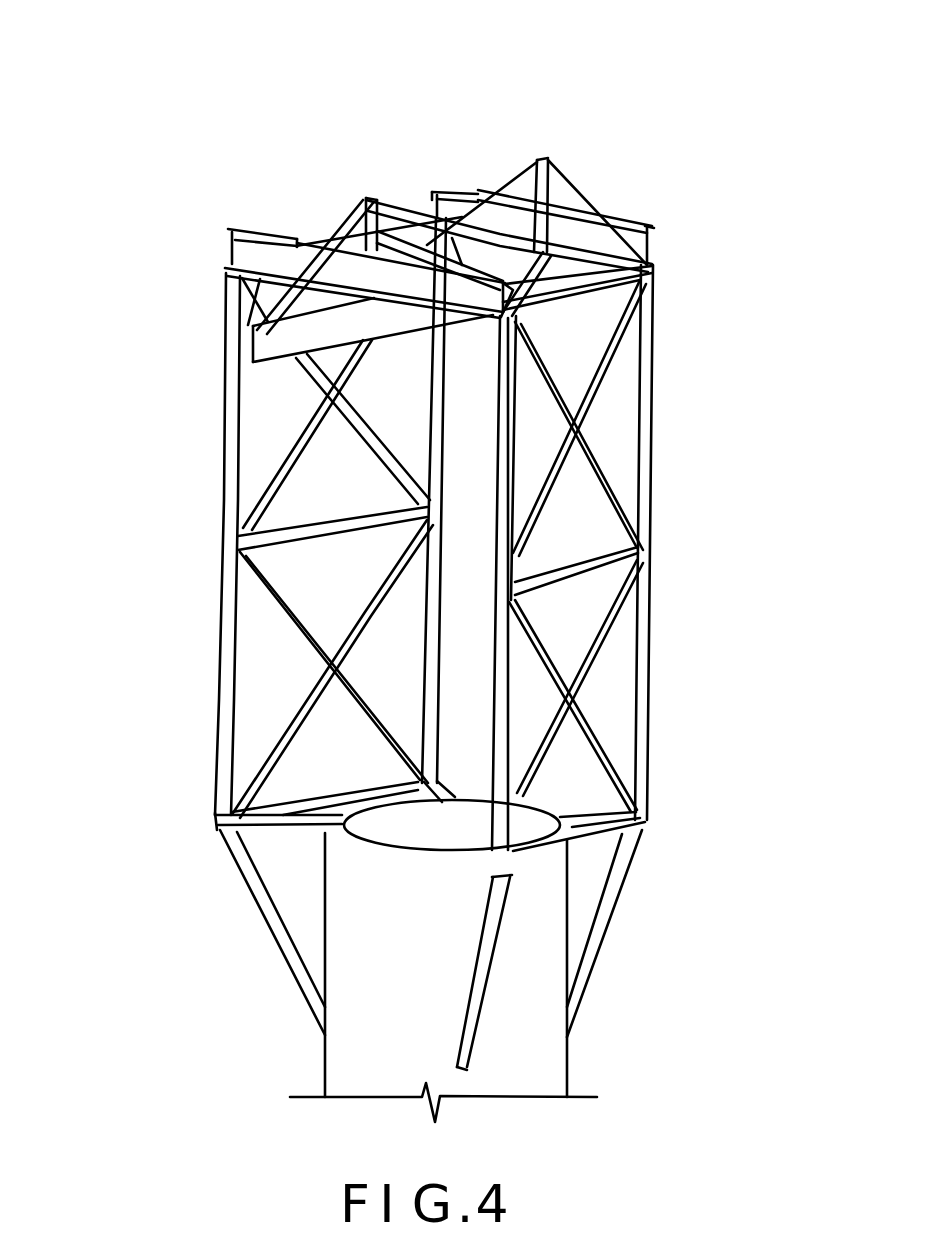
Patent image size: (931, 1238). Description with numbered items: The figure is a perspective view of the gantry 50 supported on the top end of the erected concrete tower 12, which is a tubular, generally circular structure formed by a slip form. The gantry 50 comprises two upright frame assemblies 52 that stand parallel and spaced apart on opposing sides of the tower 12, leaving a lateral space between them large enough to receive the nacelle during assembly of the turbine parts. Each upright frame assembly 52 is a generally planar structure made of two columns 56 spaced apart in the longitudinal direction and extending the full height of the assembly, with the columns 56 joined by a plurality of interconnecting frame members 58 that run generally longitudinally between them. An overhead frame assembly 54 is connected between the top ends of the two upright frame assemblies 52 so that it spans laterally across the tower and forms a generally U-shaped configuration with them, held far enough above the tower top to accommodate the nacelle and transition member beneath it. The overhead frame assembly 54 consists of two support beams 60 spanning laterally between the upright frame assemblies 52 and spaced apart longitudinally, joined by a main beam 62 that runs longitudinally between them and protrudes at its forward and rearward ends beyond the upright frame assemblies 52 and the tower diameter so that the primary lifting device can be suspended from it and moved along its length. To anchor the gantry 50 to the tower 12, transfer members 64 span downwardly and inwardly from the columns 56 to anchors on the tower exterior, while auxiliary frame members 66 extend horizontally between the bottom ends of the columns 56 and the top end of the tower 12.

The tower 12 is at (340, 1058).
The gantry 50 is at (127, 207).
The upright frame assemblies 52 is at (238, 198).
The overhead frame assembly 54 is at (463, 122).
The columns 56 is at (225, 456).
The interconnecting frame members 58 is at (606, 544).
The support beams 60 is at (230, 243).
The main beam 62 is at (256, 344).
The transfer members 64 is at (270, 933).
The auxiliary frame members 66 is at (263, 838).